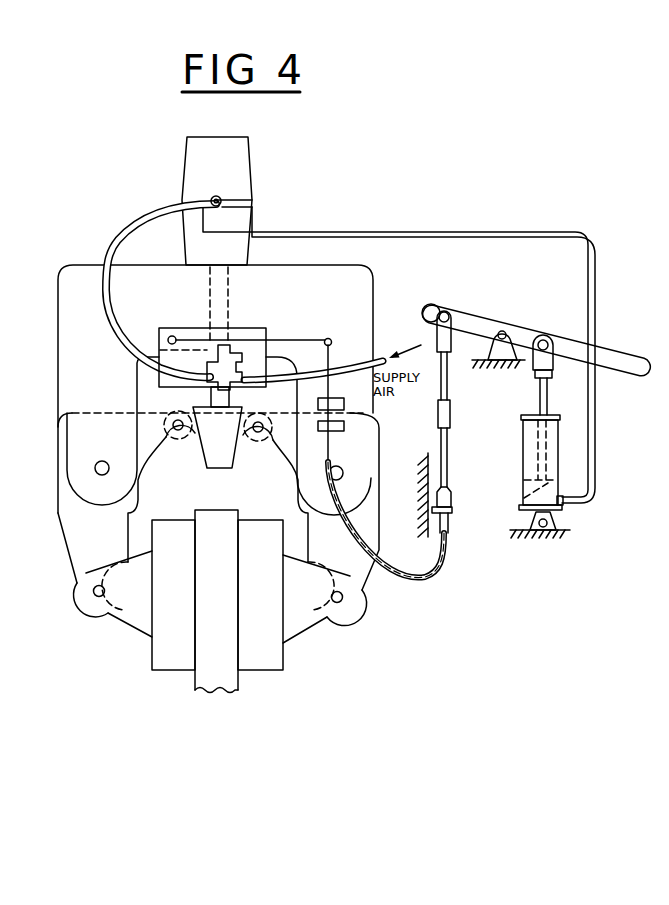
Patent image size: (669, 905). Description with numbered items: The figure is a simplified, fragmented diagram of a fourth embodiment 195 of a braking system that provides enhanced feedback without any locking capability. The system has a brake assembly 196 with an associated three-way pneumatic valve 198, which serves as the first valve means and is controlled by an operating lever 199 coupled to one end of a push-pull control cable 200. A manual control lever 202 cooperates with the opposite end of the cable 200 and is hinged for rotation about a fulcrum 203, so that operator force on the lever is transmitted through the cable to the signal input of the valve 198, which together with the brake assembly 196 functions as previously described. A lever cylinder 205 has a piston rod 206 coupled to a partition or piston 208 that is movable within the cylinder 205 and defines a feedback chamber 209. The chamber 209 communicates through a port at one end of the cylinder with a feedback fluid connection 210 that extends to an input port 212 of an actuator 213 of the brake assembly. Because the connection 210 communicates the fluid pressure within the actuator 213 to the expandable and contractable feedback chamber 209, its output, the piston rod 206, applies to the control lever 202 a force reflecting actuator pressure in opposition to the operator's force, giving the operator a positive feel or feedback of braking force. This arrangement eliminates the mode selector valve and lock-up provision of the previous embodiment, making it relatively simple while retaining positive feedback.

The fourth embodiment 195 is at (380, 164).
The brake assembly 196 is at (73, 243).
The three-way pneumatic valve 198 is at (234, 356).
The operating lever 199 is at (320, 338).
The push-pull control cable 200 is at (400, 580).
The manual control lever 202 is at (474, 313).
The fulcrum 203 is at (500, 327).
The lever cylinder 205 is at (522, 466).
The piston rod 206 is at (538, 382).
The piston 208 is at (522, 498).
The feedback chamber 209 is at (540, 496).
The feedback fluid connection 210 is at (382, 231).
The input port 212 is at (222, 198).
The actuator 213 is at (237, 150).